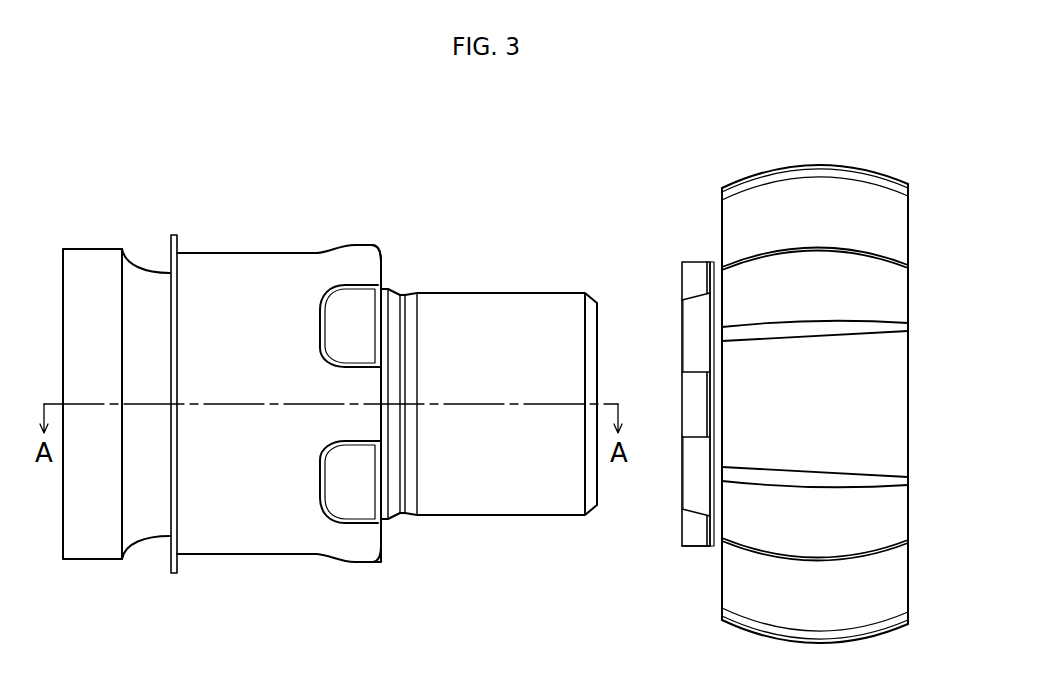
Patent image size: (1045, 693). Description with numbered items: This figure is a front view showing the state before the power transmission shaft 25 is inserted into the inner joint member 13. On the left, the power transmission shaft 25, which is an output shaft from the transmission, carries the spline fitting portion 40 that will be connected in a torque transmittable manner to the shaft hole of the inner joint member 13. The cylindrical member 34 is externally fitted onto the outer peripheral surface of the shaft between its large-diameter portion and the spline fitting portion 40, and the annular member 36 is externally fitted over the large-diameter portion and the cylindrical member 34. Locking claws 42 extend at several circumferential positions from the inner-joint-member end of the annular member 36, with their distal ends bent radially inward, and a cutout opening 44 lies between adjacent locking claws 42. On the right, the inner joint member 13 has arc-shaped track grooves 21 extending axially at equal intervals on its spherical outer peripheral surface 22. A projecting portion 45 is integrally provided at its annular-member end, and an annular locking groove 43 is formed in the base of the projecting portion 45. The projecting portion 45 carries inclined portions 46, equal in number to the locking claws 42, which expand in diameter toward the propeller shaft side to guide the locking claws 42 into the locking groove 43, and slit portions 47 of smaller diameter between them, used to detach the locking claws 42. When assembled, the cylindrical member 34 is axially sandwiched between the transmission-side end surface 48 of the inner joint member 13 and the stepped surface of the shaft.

The inner joint member 13 is at (886, 166).
The track grooves 21 is at (878, 404).
The spherical outer peripheral surface 22 is at (878, 514).
The power transmission shaft 25 is at (59, 549).
The cylindrical member 34 is at (364, 474).
The annular member 36 is at (260, 240).
The spline fitting portion 40 is at (520, 315).
The locking claws 42 is at (381, 246).
The locking groove 43 is at (722, 446).
The cutout opening 44 is at (324, 328).
The projecting portion 45 is at (693, 262).
The inclined portions 46 is at (700, 281).
The slit portions 47 is at (700, 336).
The transmission-side end surface 48 is at (682, 538).